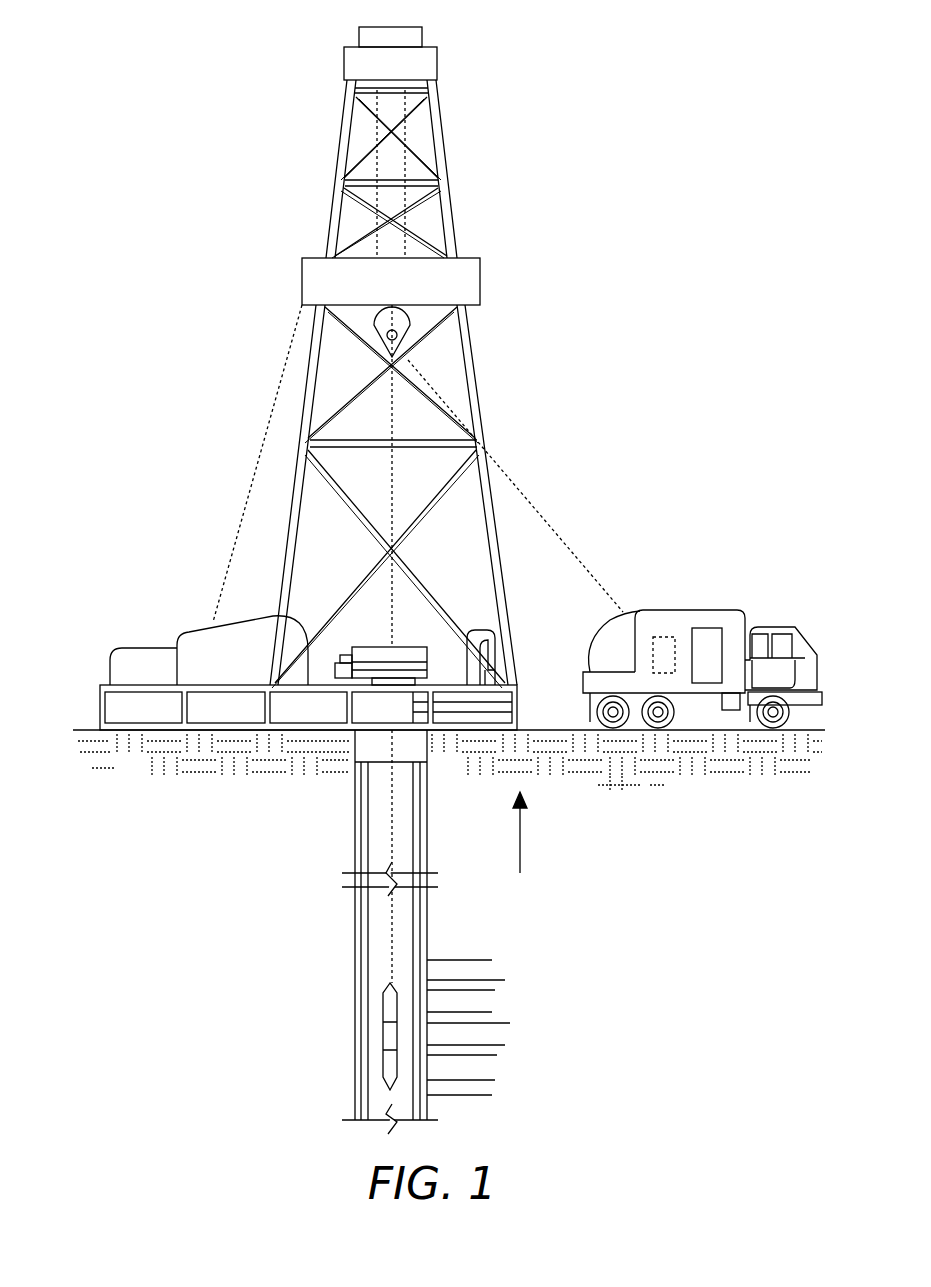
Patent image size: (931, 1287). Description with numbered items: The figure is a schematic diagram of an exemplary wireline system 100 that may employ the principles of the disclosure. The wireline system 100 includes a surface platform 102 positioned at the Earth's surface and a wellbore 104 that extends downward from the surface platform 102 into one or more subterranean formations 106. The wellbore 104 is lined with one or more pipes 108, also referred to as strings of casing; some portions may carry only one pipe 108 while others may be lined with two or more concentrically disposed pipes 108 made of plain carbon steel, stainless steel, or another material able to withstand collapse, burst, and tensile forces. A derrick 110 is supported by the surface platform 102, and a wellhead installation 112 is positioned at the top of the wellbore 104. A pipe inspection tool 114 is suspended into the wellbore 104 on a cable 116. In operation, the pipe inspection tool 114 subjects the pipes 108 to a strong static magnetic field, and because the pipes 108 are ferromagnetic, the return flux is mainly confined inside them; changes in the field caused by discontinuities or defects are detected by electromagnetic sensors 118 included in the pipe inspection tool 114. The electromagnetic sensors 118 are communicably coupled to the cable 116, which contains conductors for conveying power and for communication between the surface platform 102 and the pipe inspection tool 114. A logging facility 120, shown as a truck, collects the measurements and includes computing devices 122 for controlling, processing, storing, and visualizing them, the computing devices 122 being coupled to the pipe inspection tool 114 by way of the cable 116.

The wireline system 100 is at (663, 268).
The surface platform 102 is at (100, 693).
The wellbore 104 is at (429, 924).
The subterranean formations 106 is at (507, 953).
The pipes 108 is at (355, 942).
The derrick 110 is at (447, 157).
The wellhead installation 112 is at (407, 647).
The pipe inspection tool 114 is at (381, 998).
The cable 116 is at (535, 505).
The electromagnetic sensors 118 is at (388, 1033).
The logging facility 120 is at (742, 610).
The computing devices 122 is at (668, 637).